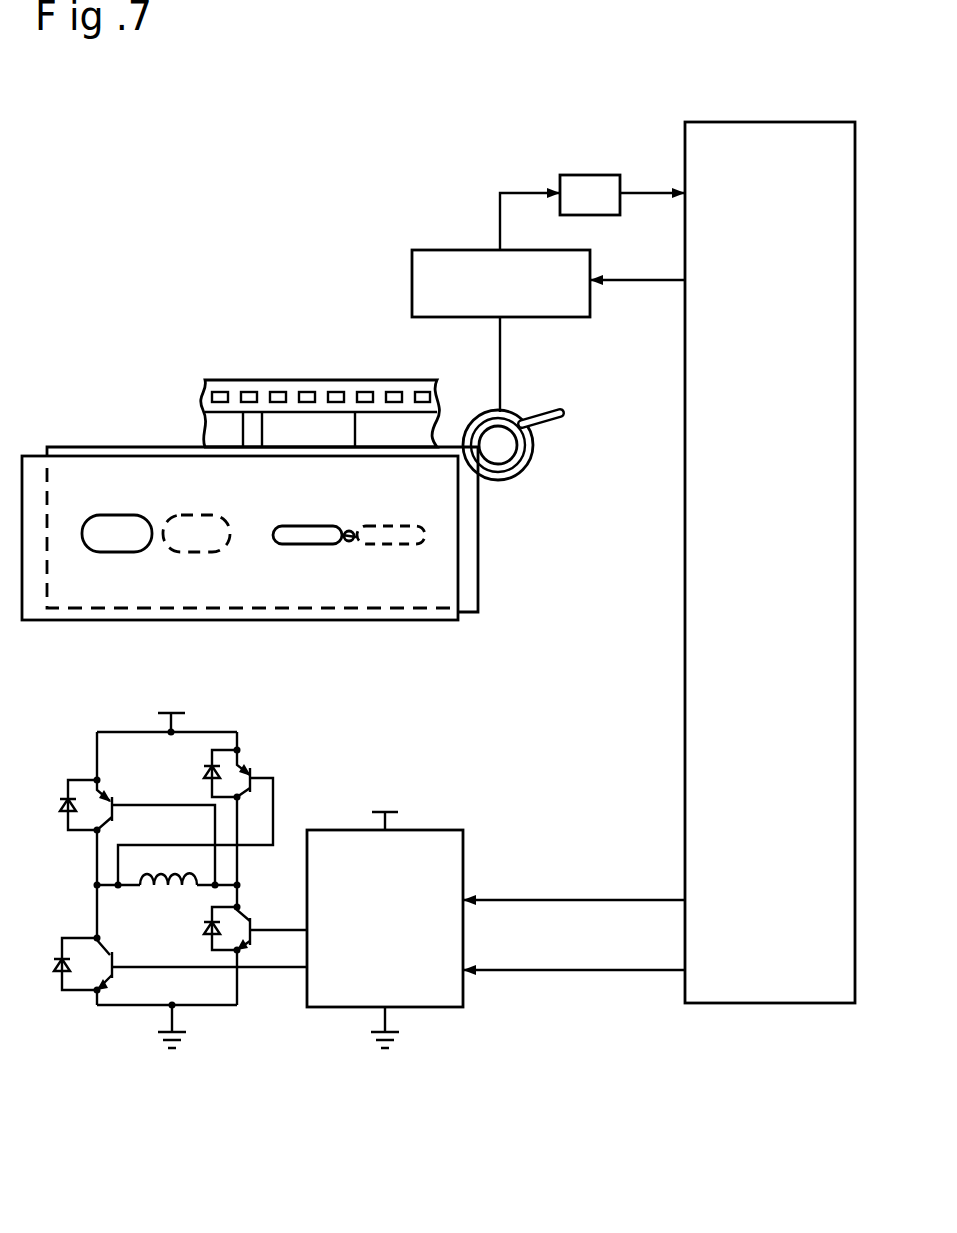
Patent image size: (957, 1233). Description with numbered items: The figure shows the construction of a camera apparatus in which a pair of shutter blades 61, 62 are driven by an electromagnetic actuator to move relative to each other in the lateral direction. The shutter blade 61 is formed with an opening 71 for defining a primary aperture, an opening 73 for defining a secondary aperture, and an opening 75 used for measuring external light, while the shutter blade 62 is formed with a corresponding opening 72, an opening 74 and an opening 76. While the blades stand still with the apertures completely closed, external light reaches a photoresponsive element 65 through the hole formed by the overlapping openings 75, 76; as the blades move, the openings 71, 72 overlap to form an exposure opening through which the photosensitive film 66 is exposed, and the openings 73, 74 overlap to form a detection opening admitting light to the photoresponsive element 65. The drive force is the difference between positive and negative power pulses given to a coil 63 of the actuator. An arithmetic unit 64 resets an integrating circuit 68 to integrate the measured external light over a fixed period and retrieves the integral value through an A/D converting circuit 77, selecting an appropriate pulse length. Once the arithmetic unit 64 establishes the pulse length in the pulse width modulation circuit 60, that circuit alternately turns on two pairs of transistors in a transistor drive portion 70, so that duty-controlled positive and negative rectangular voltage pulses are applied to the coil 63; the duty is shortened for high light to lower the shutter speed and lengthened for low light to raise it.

The pulse width modulation circuit 60 is at (338, 830).
The shutter blade 61 is at (458, 580).
The shutter blade 62 is at (480, 533).
The coil 63 is at (163, 888).
The arithmetic unit 64 is at (685, 683).
The photoresponsive element 65 is at (480, 422).
The photosensitive film 66 is at (258, 380).
The integrating circuit 68 is at (455, 250).
The transistor drive portion 70 is at (214, 843).
The opening 71 is at (116, 515).
The opening 72 is at (190, 515).
The opening 73 is at (283, 526).
The opening 74 is at (395, 526).
The opening 75 is at (350, 530).
The opening 76 is at (345, 540).
The A/D converting circuit 77 is at (590, 175).